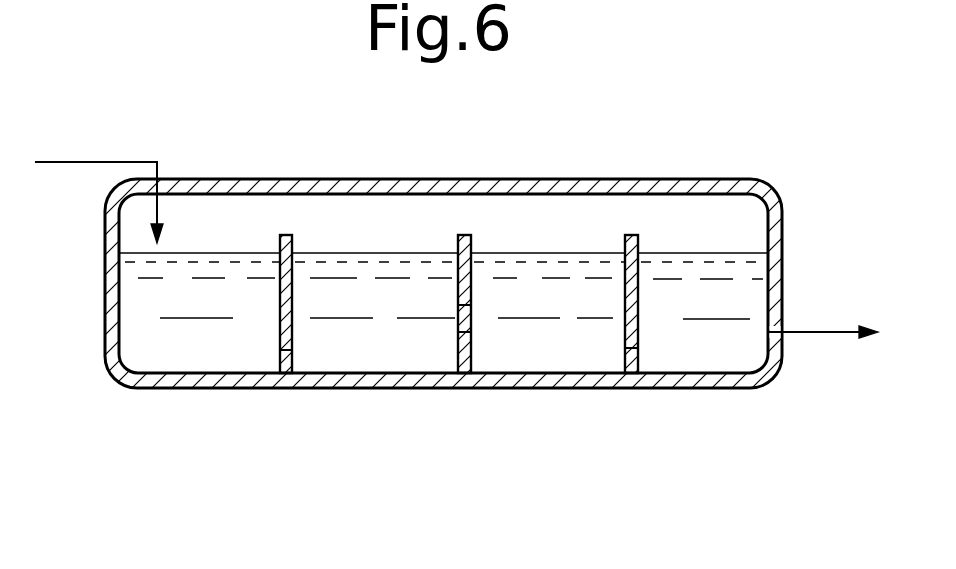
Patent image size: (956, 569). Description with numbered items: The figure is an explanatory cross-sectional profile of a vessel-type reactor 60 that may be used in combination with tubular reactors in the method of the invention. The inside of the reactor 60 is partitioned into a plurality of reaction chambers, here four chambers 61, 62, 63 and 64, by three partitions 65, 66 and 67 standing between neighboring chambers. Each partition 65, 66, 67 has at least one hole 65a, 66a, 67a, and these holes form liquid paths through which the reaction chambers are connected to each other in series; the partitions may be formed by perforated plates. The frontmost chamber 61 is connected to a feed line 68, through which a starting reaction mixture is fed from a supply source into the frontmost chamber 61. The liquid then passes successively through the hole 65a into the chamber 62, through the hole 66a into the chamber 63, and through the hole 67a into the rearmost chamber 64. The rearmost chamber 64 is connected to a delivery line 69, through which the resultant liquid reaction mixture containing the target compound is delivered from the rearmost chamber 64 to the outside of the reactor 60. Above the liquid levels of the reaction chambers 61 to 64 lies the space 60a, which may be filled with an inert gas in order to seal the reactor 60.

The reactor 60 is at (492, 172).
The space 60a is at (690, 213).
The frontmost chamber 61 is at (189, 357).
The chamber 62 is at (366, 358).
The chamber 63 is at (548, 358).
The rearmost chamber 64 is at (723, 362).
The partition 65 is at (285, 342).
The hole 65a is at (284, 360).
The partition 66 is at (458, 342).
The hole 66a is at (458, 322).
The partition 67 is at (642, 342).
The hole 67a is at (631, 358).
The feed line 68 is at (107, 160).
The delivery line 69 is at (815, 330).